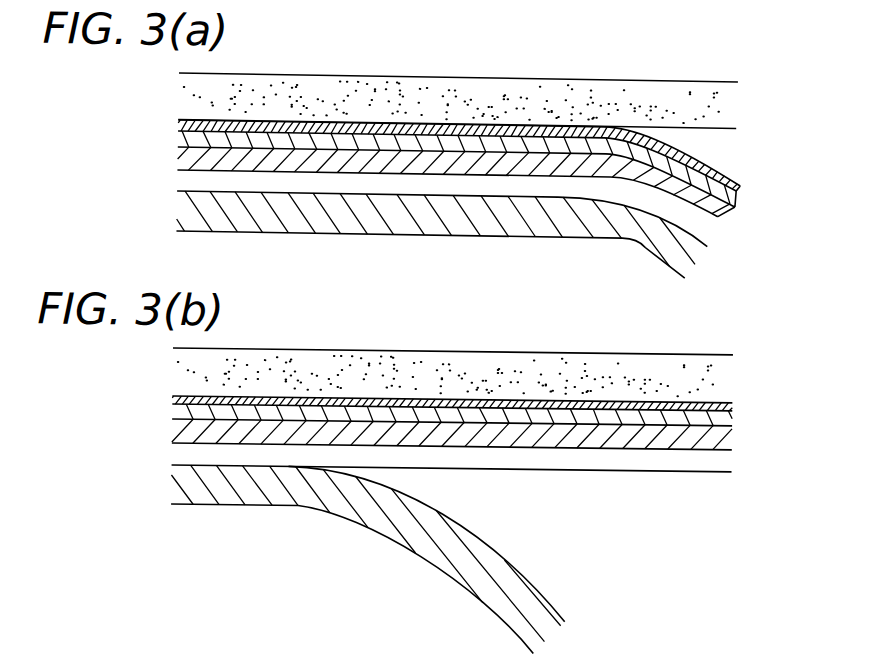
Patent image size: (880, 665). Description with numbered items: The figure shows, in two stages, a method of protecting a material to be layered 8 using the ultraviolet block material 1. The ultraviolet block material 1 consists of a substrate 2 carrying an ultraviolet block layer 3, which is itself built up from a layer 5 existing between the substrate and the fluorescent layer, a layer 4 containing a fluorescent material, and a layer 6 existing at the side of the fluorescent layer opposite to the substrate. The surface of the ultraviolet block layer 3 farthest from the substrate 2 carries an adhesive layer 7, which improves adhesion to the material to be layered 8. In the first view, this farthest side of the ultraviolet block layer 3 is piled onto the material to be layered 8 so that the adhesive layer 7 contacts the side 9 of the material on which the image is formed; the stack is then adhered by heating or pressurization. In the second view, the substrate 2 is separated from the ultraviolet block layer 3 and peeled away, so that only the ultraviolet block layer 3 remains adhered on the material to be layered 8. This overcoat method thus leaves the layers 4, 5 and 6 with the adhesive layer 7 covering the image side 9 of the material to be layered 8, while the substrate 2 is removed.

In FIG. 3a, the ultraviolet block material 1 is at (167, 118).
In FIG. 3a, the substrate 2 is at (692, 252).
In FIG. 3b, the substrate 2 is at (177, 487).
In FIG. 3a, the ultraviolet block layer 3 is at (772, 182).
In FIG. 3b, the ultraviolet block layer 3 is at (165, 393).
In FIG. 3a, the layer containing a fluorescent material 4 is at (727, 208).
In FIG. 3a, the layer existing between the substrate and the layer containing a fluorescent mate 5 is at (710, 227).
In FIG. 3a, the layer existing at the side, opposite to the substrate, of the layer containing t 6 is at (753, 180).
In FIG. 3a, the adhesive layer 7 is at (743, 174).
In FIG. 3a, the material to be layered 8 is at (732, 91).
In FIG. 3b, the material to be layered 8 is at (733, 363).
In FIG. 3a, the side of a material to be layered where the image is formed 9 is at (733, 126).